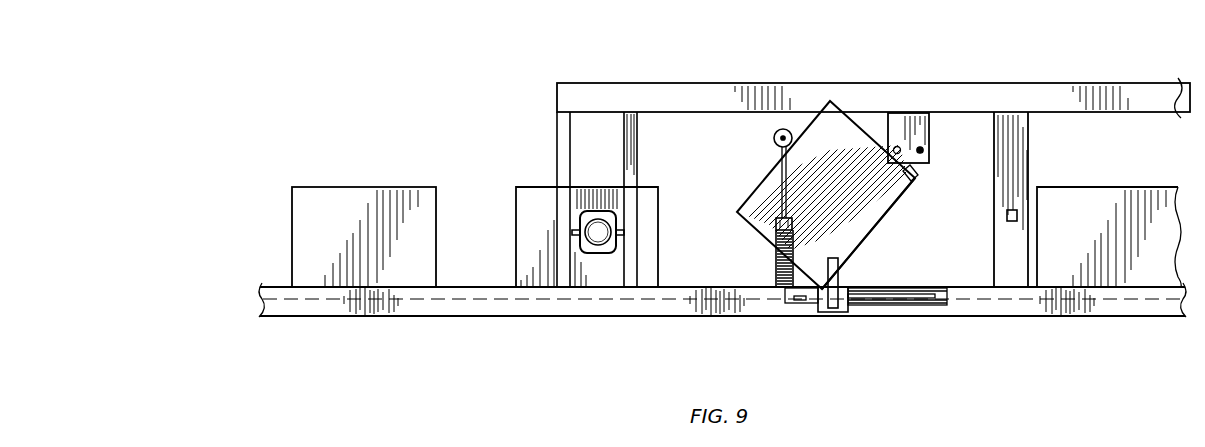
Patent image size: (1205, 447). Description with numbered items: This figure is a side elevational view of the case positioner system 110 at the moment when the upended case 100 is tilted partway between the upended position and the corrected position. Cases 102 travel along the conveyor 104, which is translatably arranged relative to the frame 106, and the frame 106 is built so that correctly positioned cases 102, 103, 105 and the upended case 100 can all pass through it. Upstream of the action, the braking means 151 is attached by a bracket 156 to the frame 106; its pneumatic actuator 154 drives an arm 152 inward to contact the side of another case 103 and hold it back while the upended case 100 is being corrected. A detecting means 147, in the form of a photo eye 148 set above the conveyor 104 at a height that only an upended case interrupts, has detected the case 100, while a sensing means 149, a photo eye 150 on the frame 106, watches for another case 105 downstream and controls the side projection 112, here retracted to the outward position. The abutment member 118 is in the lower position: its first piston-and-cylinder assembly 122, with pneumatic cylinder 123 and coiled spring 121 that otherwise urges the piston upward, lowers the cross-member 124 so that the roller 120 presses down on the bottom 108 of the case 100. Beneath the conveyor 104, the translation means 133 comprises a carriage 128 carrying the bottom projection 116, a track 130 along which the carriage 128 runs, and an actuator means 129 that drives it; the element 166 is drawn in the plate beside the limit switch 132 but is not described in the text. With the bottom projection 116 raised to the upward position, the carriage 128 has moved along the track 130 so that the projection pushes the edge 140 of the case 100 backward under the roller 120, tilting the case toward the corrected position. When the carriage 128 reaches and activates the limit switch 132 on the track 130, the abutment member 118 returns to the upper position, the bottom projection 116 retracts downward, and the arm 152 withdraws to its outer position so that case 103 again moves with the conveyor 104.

The case 100 is at (848, 207).
The cases 102 is at (377, 192).
The another case 103 is at (552, 192).
The conveyor 104 is at (376, 297).
The another case 105 is at (1087, 190).
The frame 106 is at (1013, 88).
The bottom of case 108 is at (814, 125).
The case positioner system 110 is at (670, 72).
The side projection 112 is at (924, 150).
The bottom projection 116 is at (838, 280).
The abutment member 118 is at (774, 137).
The roller 120 is at (792, 143).
The coiled spring 121 is at (776, 272).
The first piston-and-cylinder assembly 122 is at (776, 245).
The pneumatic cylinder 123 is at (793, 247).
The cross-member 124 is at (780, 148).
The carriage 128 is at (847, 312).
The actuator means 129 is at (923, 300).
The track 130 is at (825, 307).
The limit switch 132 is at (800, 303).
The translation means 133 is at (915, 308).
The edge of case 140 is at (862, 243).
The detecting means 147 is at (898, 142).
The photo eye 148 is at (915, 180).
The sensing means 149 is at (1008, 207).
The photo eye 150 is at (1007, 218).
The braking means 151 is at (618, 220).
The arm 152 is at (610, 210).
The pneumatic actuator 154 is at (602, 233).
The bracket 156 is at (572, 231).
The guide slot 166 is at (783, 300).